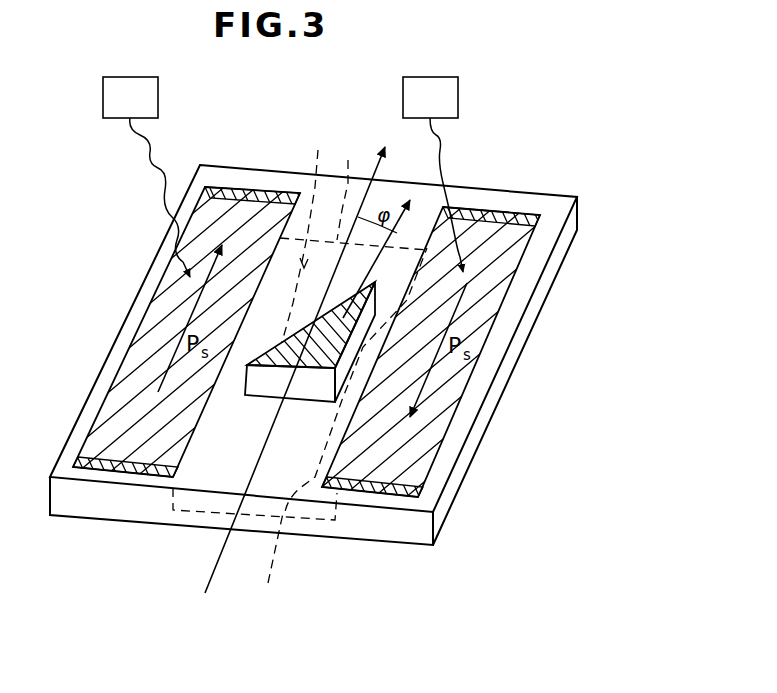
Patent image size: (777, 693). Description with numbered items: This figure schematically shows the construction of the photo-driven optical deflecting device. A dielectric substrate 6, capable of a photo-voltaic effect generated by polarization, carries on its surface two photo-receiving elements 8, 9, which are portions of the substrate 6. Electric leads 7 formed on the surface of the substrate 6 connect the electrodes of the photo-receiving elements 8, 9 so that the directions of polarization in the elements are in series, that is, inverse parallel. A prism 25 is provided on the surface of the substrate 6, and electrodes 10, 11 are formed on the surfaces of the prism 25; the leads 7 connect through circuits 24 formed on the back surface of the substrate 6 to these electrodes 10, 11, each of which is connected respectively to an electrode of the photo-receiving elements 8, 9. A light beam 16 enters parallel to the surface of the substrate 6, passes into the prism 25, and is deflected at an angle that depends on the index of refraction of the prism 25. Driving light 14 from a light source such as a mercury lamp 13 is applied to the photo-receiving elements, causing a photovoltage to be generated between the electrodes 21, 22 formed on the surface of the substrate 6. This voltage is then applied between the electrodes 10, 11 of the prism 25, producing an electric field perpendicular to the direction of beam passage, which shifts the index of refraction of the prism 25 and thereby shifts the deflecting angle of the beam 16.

The dielectric substrate 6 is at (540, 298).
The electric leads 7 is at (313, 561).
The photo-receiving element 8 is at (157, 319).
The photo-receiving element 9 is at (503, 350).
The prism electrode 10 is at (352, 326).
The prism electrode 11 is at (259, 398).
The mercury lamp 13 is at (142, 110).
The driving light 14 is at (165, 183).
The light beam 16 is at (286, 386).
The electrode 21 is at (262, 188).
The electrode 22 is at (538, 200).
The circuits 24 is at (339, 367).
The prism 25 is at (316, 396).